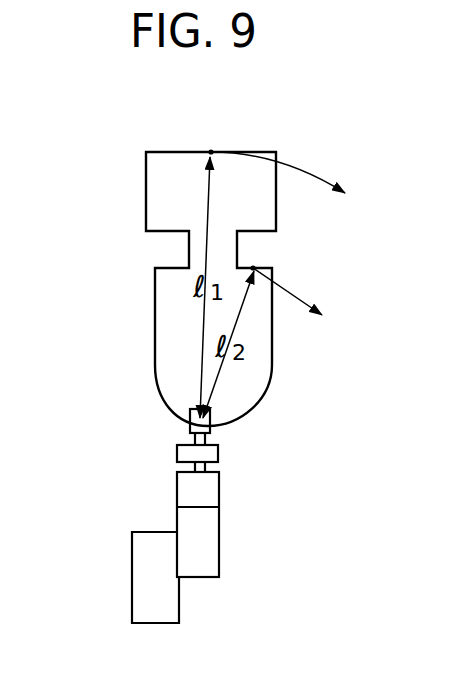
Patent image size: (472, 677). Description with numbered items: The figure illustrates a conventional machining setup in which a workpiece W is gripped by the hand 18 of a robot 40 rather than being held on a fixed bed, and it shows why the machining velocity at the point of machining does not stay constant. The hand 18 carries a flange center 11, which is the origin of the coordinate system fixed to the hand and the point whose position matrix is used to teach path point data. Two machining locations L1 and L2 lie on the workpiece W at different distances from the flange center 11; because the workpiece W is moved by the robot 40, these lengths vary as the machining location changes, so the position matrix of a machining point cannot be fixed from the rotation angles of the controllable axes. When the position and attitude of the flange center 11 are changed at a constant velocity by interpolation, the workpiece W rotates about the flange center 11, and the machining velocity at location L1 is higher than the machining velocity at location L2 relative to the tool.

The workpiece W is at (157, 203).
The flange center 11 is at (192, 423).
The hand 18 is at (211, 422).
The robot 40 is at (236, 550).
The machining location L1 is at (211, 152).
The machining location L2 is at (254, 268).